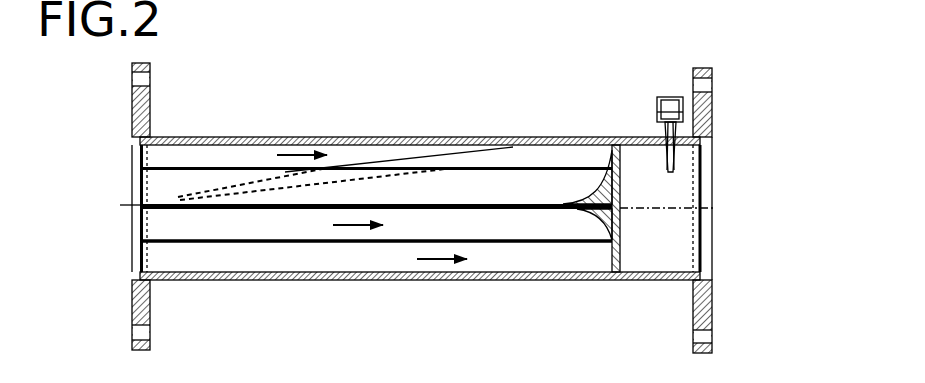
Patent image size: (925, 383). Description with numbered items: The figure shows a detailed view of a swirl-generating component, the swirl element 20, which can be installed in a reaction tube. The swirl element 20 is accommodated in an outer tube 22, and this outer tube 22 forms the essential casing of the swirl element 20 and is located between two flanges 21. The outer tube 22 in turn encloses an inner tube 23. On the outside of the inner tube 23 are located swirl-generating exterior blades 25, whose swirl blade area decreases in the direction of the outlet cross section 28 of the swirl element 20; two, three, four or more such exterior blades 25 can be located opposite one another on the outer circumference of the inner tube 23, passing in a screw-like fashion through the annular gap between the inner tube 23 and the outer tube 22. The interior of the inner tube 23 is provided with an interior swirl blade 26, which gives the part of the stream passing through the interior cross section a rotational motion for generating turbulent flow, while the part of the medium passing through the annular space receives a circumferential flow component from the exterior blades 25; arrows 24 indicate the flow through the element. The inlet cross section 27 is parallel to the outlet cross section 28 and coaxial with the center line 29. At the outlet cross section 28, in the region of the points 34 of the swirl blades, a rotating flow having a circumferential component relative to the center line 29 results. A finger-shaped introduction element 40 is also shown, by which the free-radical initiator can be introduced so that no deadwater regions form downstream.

The swirl element 20 is at (422, 209).
The flange 21 is at (152, 97).
The outer tube 22 is at (363, 137).
The inner tube 23 is at (243, 166).
The flow direction arrows 24 is at (297, 148).
The exterior swirl blade 25 is at (480, 158).
The interior swirl blade 26 is at (542, 216).
The inlet cross section 27 is at (138, 208).
The outlet cross section 28 is at (633, 195).
The center line 29 is at (670, 210).
The points of the swirl blades 34 is at (178, 198).
The introduction element 40 is at (672, 97).